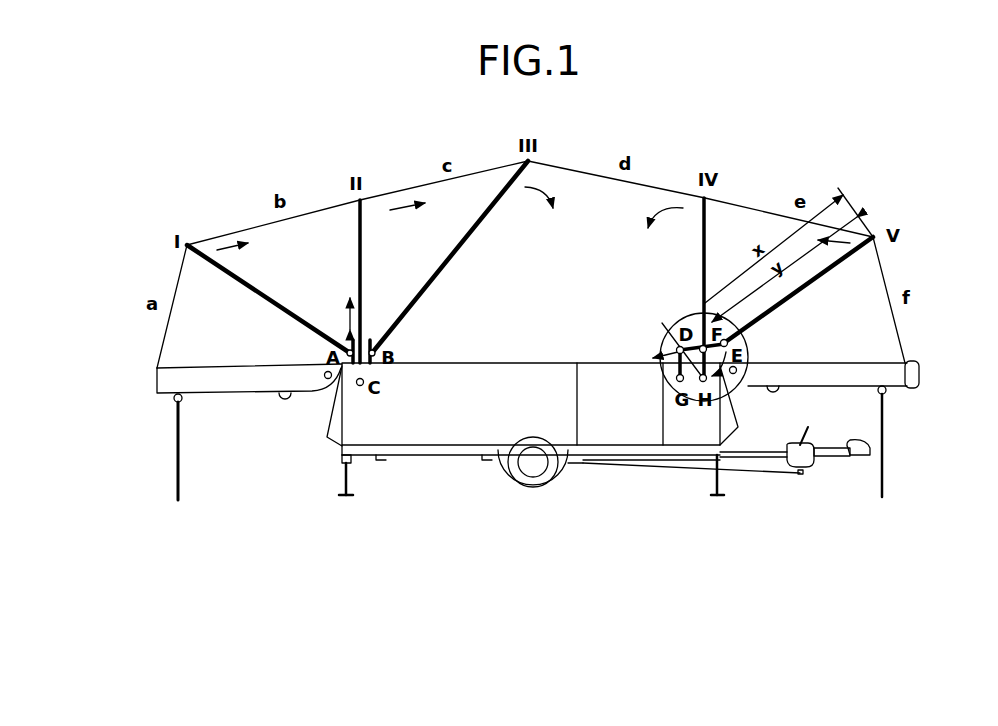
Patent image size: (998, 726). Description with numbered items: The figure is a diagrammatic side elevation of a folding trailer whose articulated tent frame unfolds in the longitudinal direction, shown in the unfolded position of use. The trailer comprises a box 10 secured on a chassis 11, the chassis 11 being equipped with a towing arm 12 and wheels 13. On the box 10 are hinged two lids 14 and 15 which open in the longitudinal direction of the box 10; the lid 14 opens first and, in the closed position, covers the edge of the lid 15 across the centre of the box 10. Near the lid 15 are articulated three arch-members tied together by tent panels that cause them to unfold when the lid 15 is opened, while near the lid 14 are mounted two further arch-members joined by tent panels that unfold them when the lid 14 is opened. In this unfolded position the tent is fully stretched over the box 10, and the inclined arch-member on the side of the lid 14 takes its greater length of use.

The box 10 is at (532, 404).
The chassis 11 is at (531, 470).
The towing arm 12 is at (726, 461).
The wheels 13 is at (537, 466).
The lid 14 is at (900, 388).
The lid 15 is at (162, 395).